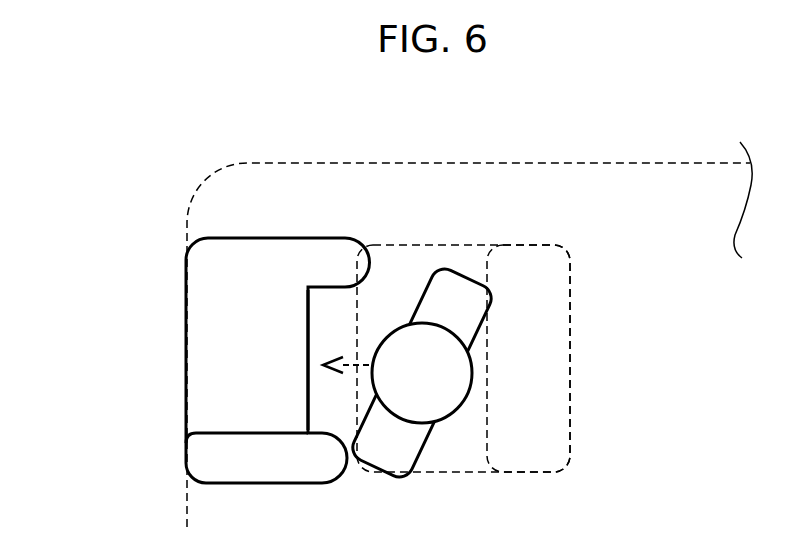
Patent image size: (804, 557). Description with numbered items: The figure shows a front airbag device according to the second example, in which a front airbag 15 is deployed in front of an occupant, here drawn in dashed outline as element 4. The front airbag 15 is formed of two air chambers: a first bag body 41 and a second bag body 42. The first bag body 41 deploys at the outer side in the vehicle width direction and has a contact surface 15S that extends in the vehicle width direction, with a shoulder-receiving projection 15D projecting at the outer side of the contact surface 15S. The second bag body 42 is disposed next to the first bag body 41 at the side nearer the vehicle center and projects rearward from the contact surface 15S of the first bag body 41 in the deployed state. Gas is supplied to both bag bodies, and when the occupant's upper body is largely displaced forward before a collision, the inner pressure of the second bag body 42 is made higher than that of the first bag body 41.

The seat 4 is at (553, 370).
The front airbag 15 is at (199, 334).
The shoulder-receiving projection 15D is at (342, 257).
The contact surface 15S is at (312, 352).
The first bag body 41 is at (215, 370).
The second bag body 42 is at (215, 458).